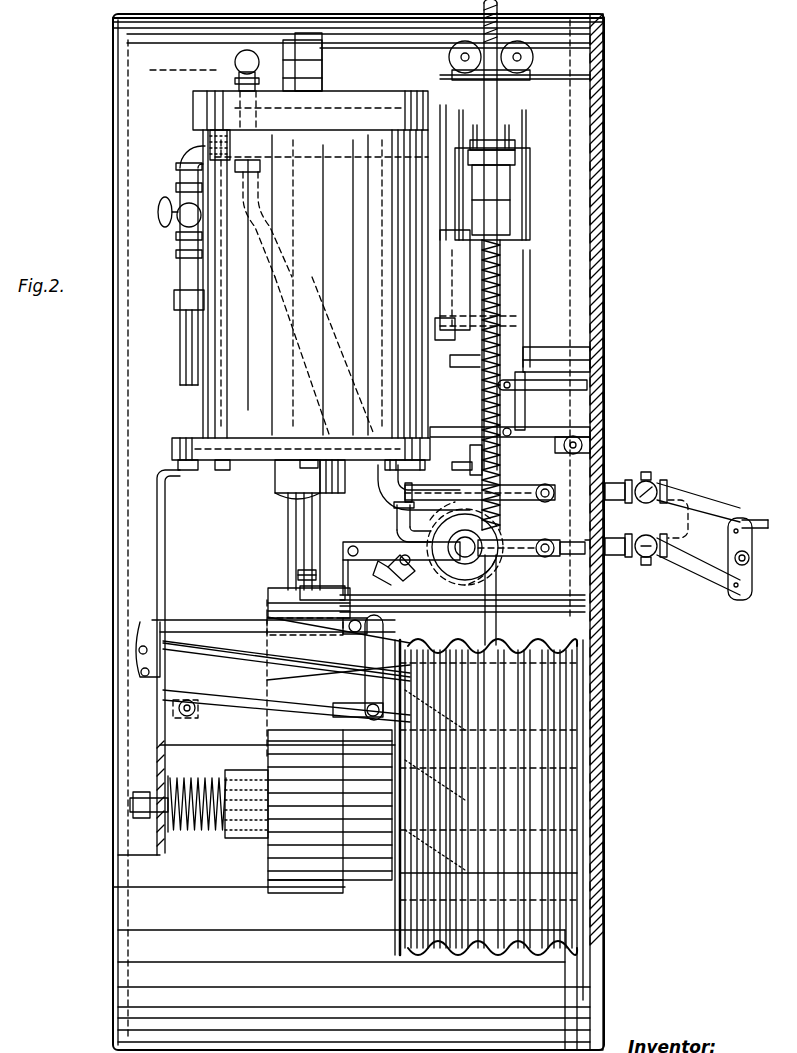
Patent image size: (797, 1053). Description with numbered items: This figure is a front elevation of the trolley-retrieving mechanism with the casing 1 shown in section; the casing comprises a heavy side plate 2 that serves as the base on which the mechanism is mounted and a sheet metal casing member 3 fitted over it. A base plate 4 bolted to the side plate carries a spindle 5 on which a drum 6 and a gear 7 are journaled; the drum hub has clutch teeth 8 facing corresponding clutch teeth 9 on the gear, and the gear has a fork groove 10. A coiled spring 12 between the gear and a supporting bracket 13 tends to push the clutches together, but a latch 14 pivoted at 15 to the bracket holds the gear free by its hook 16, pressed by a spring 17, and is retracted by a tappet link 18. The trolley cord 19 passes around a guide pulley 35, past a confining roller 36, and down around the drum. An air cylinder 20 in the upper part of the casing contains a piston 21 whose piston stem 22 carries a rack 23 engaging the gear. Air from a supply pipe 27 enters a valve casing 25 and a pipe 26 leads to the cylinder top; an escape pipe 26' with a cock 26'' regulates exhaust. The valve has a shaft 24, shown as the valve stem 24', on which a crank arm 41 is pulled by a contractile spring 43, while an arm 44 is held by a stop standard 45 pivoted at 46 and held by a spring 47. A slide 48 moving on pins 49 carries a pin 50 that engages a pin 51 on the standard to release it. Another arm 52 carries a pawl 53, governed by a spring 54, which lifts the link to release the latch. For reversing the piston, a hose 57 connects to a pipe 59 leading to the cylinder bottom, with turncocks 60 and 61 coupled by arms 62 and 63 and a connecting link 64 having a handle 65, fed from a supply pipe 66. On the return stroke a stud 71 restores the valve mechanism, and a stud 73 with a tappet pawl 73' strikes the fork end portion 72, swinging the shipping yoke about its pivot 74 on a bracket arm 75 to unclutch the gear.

The casing 1 is at (113, 352).
The side plate 2 is at (598, 348).
The sheet metal casing member 3 is at (113, 455).
The base plate 4 is at (598, 640).
The spindle 5 is at (182, 840).
The drum 6 is at (545, 697).
The gear 7 is at (370, 880).
The clutch teeth 8 is at (400, 873).
The clutch teeth 9 is at (405, 800).
The fork groove 10 is at (395, 878).
The coiled spring 12 is at (212, 830).
The supporting bracket 13 is at (157, 836).
The latch 14 is at (215, 712).
The latch pivot 15 is at (173, 710).
The hook 16 is at (354, 706).
The latch spring 17 is at (212, 698).
The tappet link 18 is at (400, 624).
The trolley cord 19 is at (497, 104).
The air cylinder 20 is at (301, 300).
The piston 21 is at (192, 117).
The piston stem 22 is at (290, 525).
The rack 23 is at (270, 603).
The shaft 24 is at (519, 543).
The valve stem 24' is at (564, 564).
The valve casing 25 is at (462, 612).
The pipe 26 is at (424, 463).
The escape pipe 26' is at (168, 317).
The cock 26'' is at (167, 265).
The air supply pipe 27 is at (616, 556).
The guide pulley 35 is at (448, 332).
The confining roller 36 is at (512, 162).
The crank arm 41 is at (401, 561).
The coiled contractile spring 43 is at (490, 418).
The arm 44 is at (490, 530).
The stop standard 45 is at (502, 463).
The stop standard pivot 46 is at (584, 443).
The spring 47 is at (556, 422).
The slide 48 is at (512, 410).
The pins or screws 49 is at (502, 288).
The pin 50 is at (480, 485).
The pin 51 is at (512, 434).
The arm 52 is at (476, 545).
The pawl 53 is at (415, 572).
The pawl spring 54 is at (391, 576).
The flexible hose section 57 is at (616, 477).
The pipe 59 is at (383, 500).
The turncock 60 is at (656, 547).
The turncock 61 is at (647, 478).
The arm 62 is at (698, 572).
The arm 63 is at (700, 510).
The connecting link 64 is at (751, 559).
The handle 65 is at (754, 554).
The supply pipe 66 is at (751, 509).
The stud 71 is at (300, 565).
The shipping fork end portion 72 is at (270, 628).
The stud 73 is at (315, 623).
The tappet pawl 73' is at (321, 671).
The shipping yoke pivot 74 is at (350, 675).
The bracket arm 75 is at (286, 658).